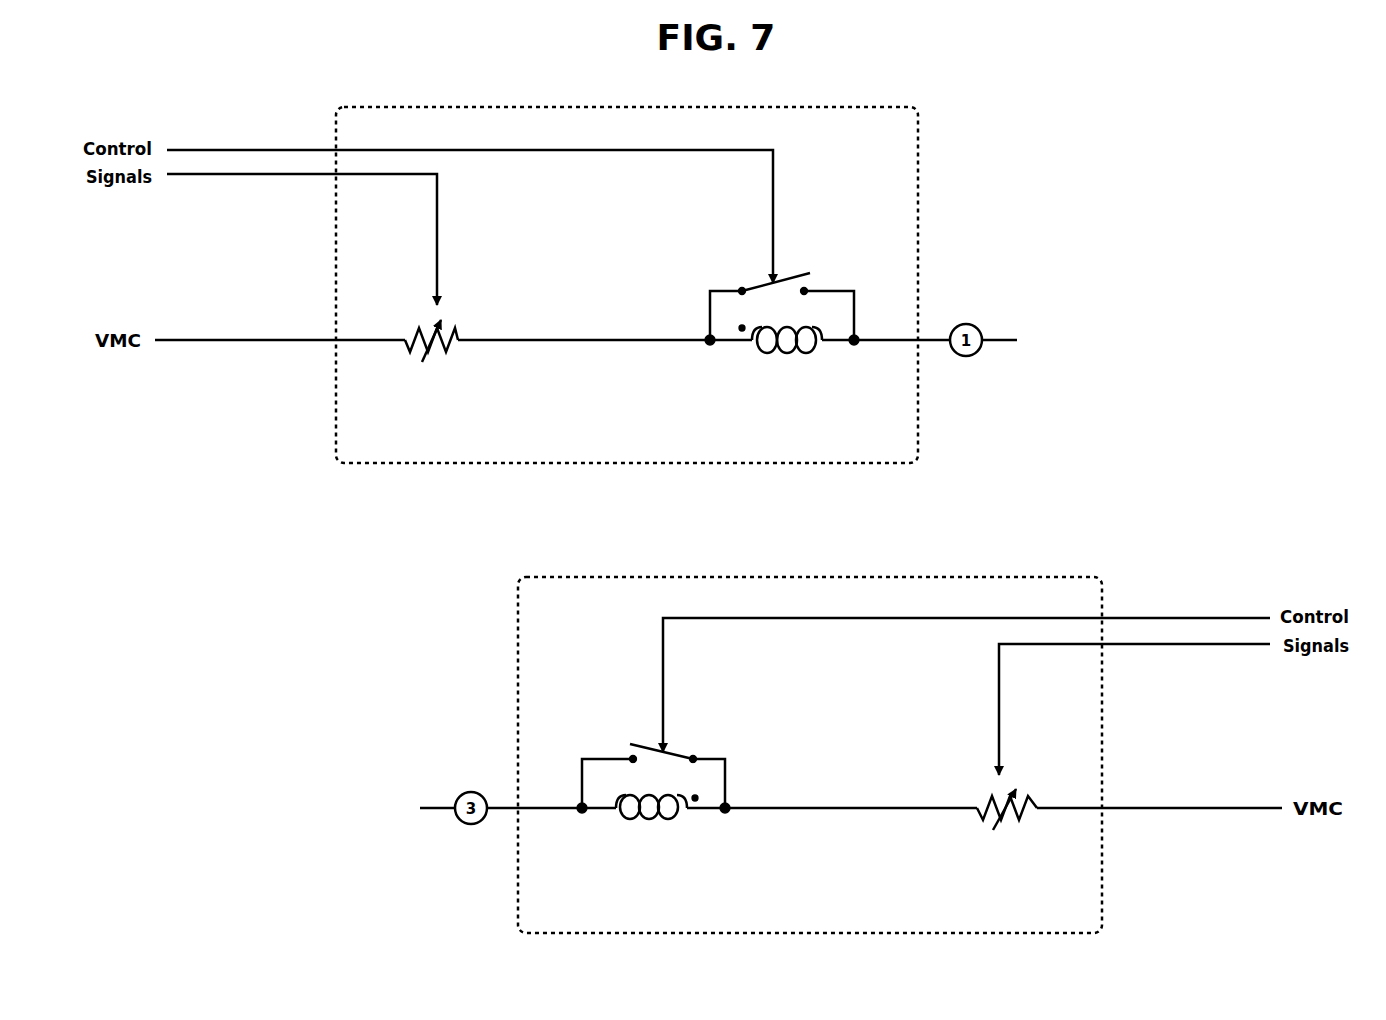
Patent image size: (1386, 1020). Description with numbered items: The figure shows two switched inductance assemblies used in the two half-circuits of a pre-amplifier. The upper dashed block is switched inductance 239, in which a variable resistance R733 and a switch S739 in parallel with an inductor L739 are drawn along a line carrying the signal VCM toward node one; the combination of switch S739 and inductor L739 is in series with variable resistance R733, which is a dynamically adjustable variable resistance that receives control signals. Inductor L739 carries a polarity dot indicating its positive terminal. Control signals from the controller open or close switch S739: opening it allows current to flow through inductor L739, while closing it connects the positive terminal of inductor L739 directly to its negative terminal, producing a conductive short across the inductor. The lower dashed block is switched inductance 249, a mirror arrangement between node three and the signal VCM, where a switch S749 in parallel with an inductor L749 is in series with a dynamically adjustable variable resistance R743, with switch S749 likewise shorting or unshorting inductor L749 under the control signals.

The switched inductance 239 is at (627, 285).
The switched inductance 249 is at (810, 755).
The variable resistance R733 is at (431, 357).
The switch S739 is at (785, 303).
The inductor L739 is at (782, 352).
The switch S749 is at (651, 771).
The inductor L749 is at (653, 823).
The variable resistance R743 is at (1007, 825).